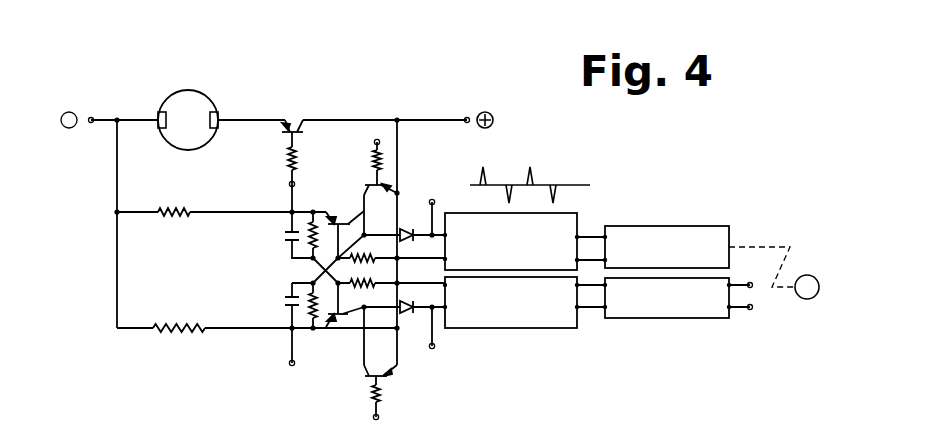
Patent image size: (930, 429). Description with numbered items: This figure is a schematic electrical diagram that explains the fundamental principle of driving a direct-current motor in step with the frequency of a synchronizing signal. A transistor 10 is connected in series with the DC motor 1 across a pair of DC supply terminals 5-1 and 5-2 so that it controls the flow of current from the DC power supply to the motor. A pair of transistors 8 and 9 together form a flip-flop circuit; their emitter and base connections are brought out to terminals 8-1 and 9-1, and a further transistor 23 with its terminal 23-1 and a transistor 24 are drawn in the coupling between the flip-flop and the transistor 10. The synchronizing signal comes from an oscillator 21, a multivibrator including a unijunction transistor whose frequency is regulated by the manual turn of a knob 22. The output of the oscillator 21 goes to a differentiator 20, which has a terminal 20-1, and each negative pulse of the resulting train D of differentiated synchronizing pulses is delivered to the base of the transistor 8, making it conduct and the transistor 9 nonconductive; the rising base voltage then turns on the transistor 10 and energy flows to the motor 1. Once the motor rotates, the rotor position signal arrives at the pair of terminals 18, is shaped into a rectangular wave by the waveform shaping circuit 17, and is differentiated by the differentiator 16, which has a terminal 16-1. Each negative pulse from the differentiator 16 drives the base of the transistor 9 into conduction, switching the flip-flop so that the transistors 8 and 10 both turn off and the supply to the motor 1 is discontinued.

The DC supply terminal 5-2 is at (90, 116).
The DC motor 1 is at (212, 100).
The transistor 10 is at (288, 117).
The terminal 8-1 is at (289, 184).
The terminal 23-1 is at (376, 138).
The DC supply terminal 5-1 is at (468, 116).
The transistor 23 is at (366, 188).
The transistor 8 is at (340, 221).
The transistor 9 is at (336, 319).
The terminal 9-1 is at (289, 363).
The transistor 24 is at (362, 370).
The terminal 20-1 is at (431, 198).
The terminal 16-1 is at (431, 351).
The train of differentiated synchronizing pulses D is at (540, 183).
The differentiator 20 is at (568, 215).
The differentiator 16 is at (478, 329).
The oscillator 21 is at (678, 226).
The waveform shaping circuit 17 is at (626, 319).
The terminals 18 is at (752, 296).
The knob 22 is at (779, 272).